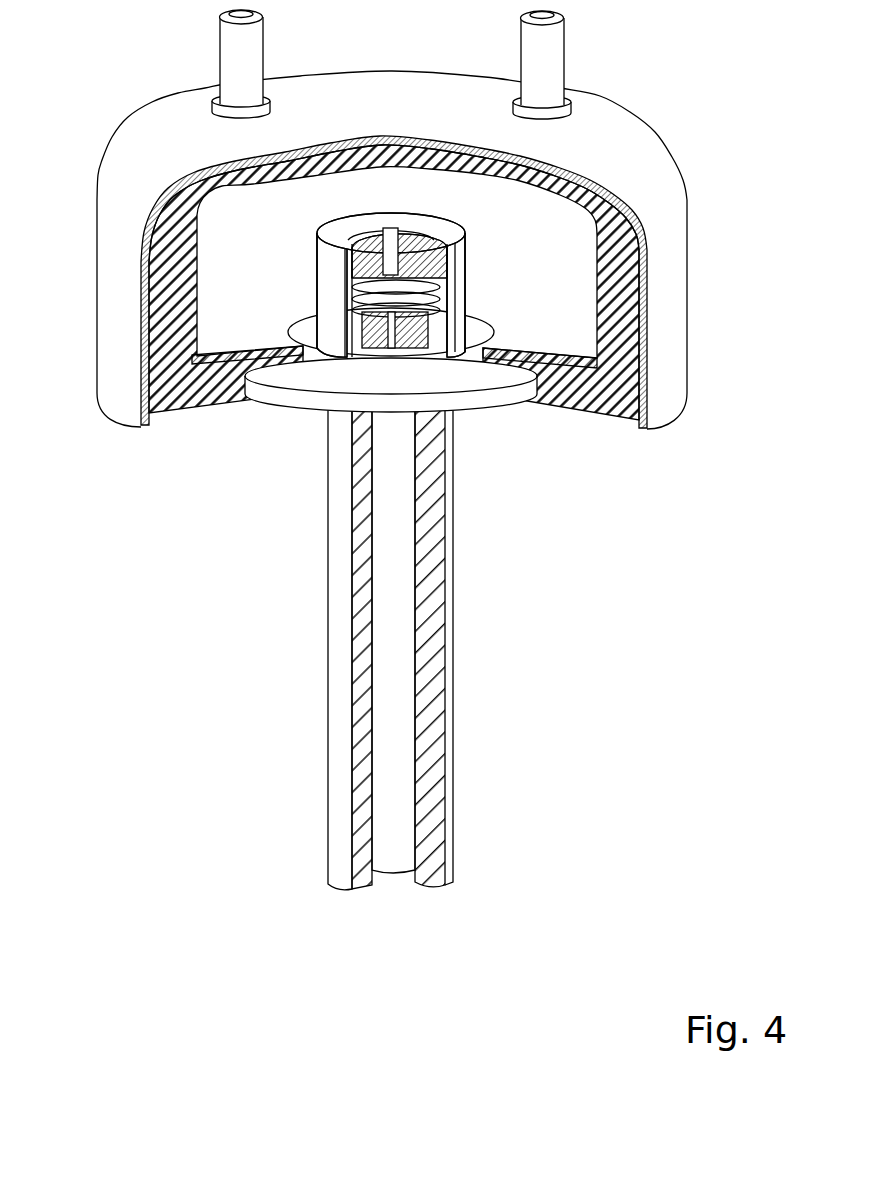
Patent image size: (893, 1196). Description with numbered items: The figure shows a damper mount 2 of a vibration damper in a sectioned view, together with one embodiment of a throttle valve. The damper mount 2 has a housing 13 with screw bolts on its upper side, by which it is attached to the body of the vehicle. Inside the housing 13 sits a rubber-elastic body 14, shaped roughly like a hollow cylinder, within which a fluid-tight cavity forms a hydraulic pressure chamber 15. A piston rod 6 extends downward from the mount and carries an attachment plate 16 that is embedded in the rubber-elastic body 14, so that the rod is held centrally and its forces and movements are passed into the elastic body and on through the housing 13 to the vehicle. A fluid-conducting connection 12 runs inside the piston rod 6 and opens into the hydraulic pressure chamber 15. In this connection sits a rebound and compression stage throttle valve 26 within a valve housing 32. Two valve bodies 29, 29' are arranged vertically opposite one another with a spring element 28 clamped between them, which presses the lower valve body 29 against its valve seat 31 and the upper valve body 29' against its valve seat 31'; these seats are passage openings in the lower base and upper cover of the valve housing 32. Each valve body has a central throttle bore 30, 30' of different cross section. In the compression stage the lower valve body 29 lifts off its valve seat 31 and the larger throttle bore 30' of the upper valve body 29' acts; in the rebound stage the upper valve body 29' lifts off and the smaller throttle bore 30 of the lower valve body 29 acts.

The damper mount 2 is at (113, 103).
The piston rod 6 is at (433, 607).
The fluid-conducting connection 12 is at (393, 558).
The housing 13 is at (633, 142).
The rubber-elastic body 14 is at (627, 263).
The hydraulic pressure chamber 15 is at (397, 264).
The attachment plate 16 is at (493, 395).
The rebound and compression stage throttle valve 26 is at (420, 197).
The spring element 28 is at (445, 281).
The lower valve body 29 is at (428, 330).
The upper valve body 29' is at (464, 246).
The throttle bore 30 is at (411, 352).
The throttle bore 30' is at (444, 237).
The valve seat 31 is at (381, 351).
The valve seat 31' is at (397, 227).
The valve housing 32 is at (325, 255).